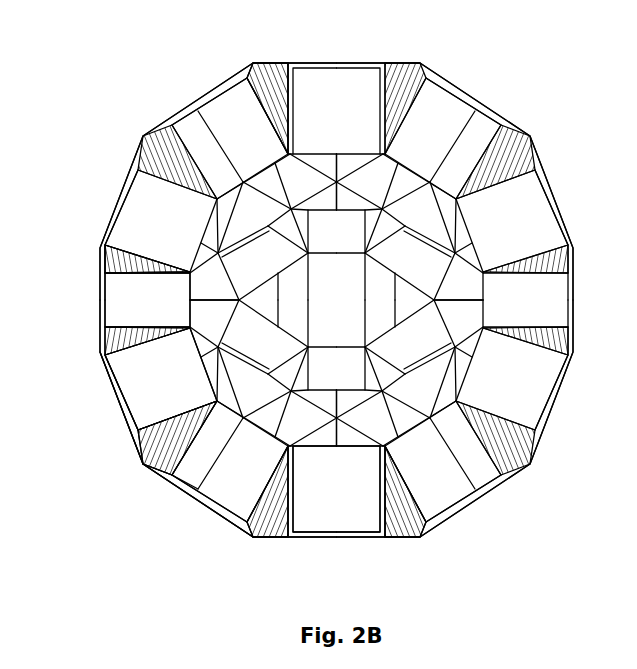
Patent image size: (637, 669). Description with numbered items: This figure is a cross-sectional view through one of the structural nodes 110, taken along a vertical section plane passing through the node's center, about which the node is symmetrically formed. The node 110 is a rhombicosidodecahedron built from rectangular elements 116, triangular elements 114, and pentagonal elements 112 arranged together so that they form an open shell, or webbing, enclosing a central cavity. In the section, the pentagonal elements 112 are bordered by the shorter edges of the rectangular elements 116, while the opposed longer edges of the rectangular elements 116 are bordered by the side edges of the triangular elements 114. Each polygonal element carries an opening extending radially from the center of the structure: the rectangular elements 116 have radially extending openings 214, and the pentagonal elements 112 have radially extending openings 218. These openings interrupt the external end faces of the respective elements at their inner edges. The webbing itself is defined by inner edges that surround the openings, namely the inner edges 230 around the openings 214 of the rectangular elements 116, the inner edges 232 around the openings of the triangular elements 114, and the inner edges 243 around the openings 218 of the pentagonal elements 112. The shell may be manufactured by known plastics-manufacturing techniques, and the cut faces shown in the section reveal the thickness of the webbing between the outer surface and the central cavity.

The structural node 110 is at (253, 64).
The inner edges 243 is at (256, 102).
The rectangular elements 116 is at (102, 270).
The radially extending openings 214 is at (128, 295).
The inner edges 232 is at (154, 423).
The triangular elements 114 is at (143, 458).
The pentagonal elements 112 is at (157, 472).
The radially extending openings 218 is at (232, 485).
The inner edges 230 is at (384, 512).